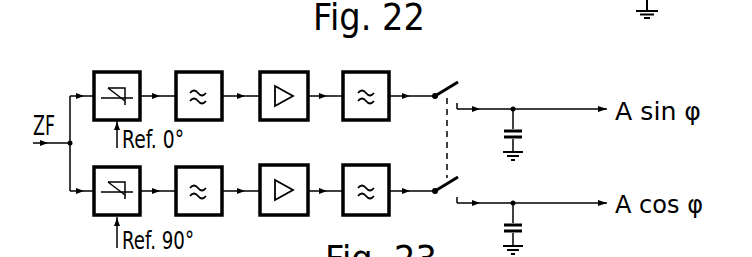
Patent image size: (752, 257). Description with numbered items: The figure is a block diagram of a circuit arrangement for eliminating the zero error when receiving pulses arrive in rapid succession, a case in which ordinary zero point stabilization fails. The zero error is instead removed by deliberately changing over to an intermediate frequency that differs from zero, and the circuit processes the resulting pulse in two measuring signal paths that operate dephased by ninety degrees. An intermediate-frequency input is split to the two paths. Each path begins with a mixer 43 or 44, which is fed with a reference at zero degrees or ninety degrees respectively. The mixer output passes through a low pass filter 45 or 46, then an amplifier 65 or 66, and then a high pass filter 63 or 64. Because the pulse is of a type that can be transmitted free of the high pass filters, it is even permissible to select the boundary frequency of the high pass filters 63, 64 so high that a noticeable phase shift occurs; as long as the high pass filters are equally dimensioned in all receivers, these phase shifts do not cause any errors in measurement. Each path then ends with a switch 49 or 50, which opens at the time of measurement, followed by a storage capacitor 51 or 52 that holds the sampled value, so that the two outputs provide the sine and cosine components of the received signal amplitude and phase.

The mixer 43 is at (121, 60).
The mixer 44 is at (93, 209).
The low pass filter 45 is at (201, 60).
The low pass filter 46 is at (203, 155).
The amplifier 65 is at (277, 72).
The amplifier 66 is at (283, 151).
The high pass filter 63 is at (365, 58).
The high pass filter 64 is at (367, 151).
The switch 49 is at (460, 87).
The switch 50 is at (460, 182).
The storage capacitor 51 is at (526, 134).
The storage capacitor 52 is at (526, 228).